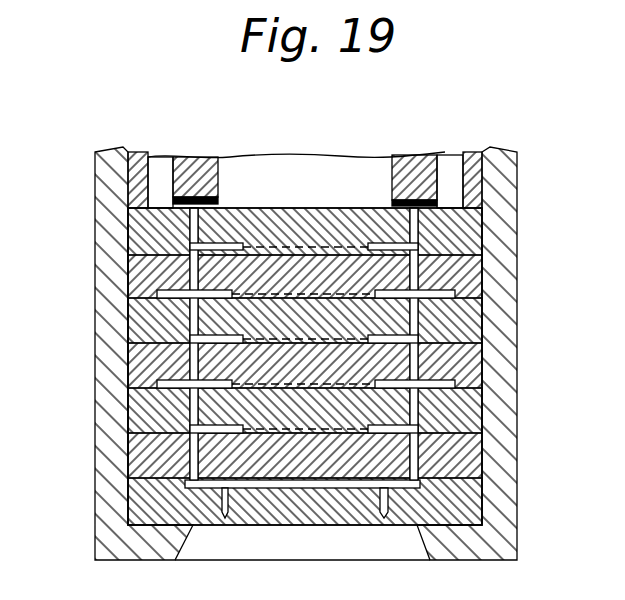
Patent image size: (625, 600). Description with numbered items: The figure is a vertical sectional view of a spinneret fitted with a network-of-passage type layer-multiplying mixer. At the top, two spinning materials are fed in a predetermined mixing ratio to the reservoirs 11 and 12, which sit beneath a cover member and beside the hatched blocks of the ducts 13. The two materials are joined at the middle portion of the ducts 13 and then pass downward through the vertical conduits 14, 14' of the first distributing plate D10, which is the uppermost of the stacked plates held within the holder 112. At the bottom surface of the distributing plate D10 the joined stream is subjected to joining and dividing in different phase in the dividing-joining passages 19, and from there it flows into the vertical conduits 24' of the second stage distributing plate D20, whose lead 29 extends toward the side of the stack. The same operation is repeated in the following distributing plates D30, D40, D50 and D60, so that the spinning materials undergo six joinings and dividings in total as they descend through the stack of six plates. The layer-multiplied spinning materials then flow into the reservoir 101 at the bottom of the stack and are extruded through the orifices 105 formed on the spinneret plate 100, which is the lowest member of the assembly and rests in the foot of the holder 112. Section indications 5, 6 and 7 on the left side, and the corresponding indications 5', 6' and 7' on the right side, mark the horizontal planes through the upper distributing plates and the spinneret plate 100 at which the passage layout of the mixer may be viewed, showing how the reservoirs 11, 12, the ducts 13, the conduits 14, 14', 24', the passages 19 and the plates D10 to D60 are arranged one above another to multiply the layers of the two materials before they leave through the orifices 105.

The reservoir 11 is at (162, 168).
The reservoir 12 is at (322, 170).
The ducts 13 is at (205, 157).
The left electrode lead channel 14 is at (215, 288).
The vertical conduits 14' is at (473, 320).
The dividing-joining passages 19 is at (198, 232).
The vertical conduits 24' is at (481, 294).
The electrode lead 29 is at (433, 296).
The distributing plate D10 is at (135, 230).
The second stage distributing plate D20 is at (135, 278).
The dielectric layer 30 D30 is at (135, 322).
The dielectric layer 40 D40 is at (135, 365).
The dielectric layer 50 D50 is at (135, 412).
The dielectric layer 60 D60 is at (135, 450).
The spinneret plate 100 is at (467, 513).
The reservoir 101 is at (285, 488).
The orifices 105 is at (383, 523).
The holder 112 is at (110, 540).
The section line 5- 5 is at (42, 204).
The section line 6- 6 is at (43, 256).
The section line 7- 7 is at (50, 492).
The section line 5'- 5' is at (563, 209).
The section line 6'- 6' is at (563, 261).
The section line 7'- 7' is at (557, 491).